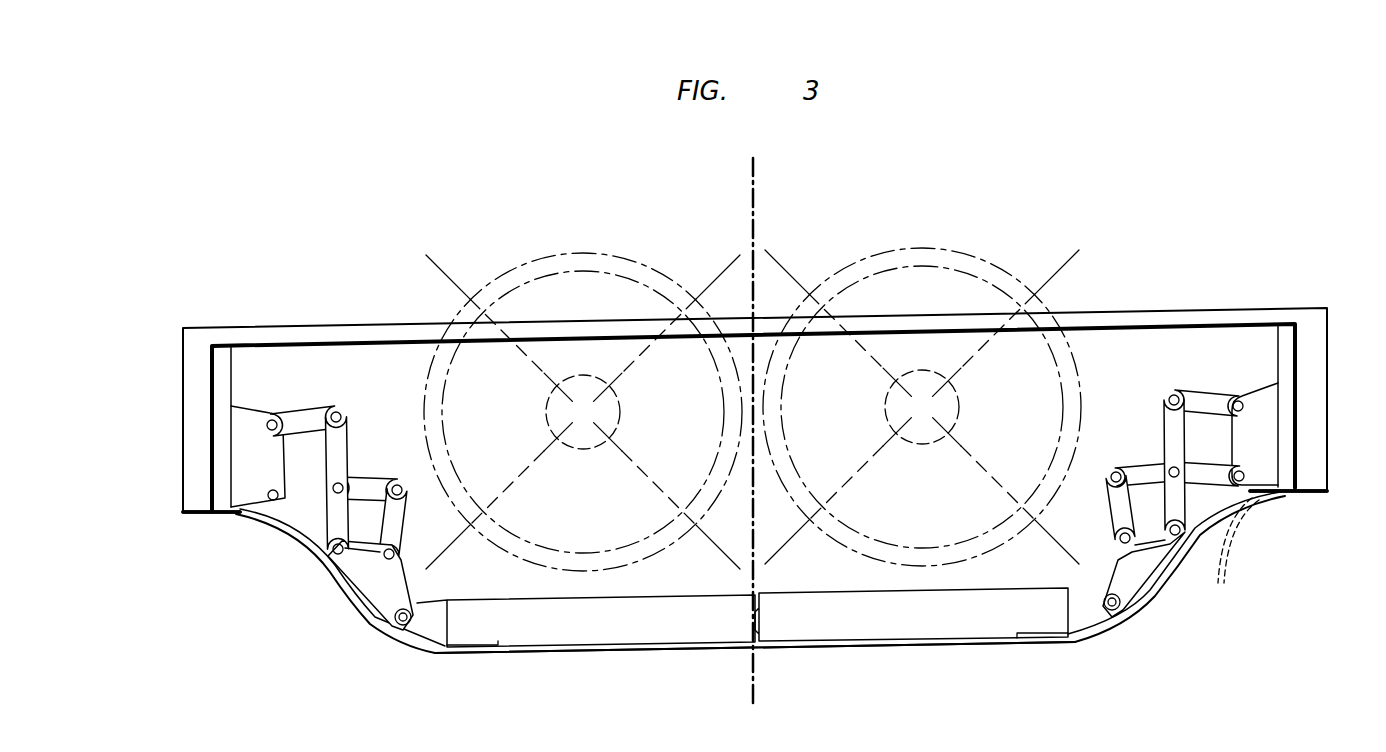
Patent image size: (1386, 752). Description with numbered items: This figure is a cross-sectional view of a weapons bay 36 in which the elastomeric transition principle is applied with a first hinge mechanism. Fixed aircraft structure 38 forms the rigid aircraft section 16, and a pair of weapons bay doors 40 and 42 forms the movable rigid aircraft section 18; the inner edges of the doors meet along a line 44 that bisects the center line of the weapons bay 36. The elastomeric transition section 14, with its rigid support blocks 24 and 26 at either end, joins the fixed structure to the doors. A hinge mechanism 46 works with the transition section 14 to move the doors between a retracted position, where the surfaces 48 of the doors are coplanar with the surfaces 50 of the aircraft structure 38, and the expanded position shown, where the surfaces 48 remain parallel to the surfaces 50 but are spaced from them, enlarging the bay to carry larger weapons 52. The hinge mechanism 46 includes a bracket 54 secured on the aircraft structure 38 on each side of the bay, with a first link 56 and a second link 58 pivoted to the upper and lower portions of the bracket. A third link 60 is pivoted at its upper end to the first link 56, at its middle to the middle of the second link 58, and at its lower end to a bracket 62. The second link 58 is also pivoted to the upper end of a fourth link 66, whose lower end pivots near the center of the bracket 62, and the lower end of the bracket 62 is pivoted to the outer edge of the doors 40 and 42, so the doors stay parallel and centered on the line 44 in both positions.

The elastomeric transition section 14 is at (352, 606).
The rigid aircraft section 16 is at (198, 342).
The movable rigid aircraft section 18 is at (520, 640).
The rigid support block 24 is at (1308, 494).
The rigid support block 26 is at (1035, 636).
The weapons bay 36 is at (1124, 279).
The aircraft structure 38 is at (1313, 358).
The weapons bay door 40 is at (693, 650).
The weapons bay door 42 is at (832, 628).
The line 44 is at (756, 178).
The hinge mechanism 46 is at (368, 402).
The surfaces of the doors 48 is at (583, 653).
The surfaces of the aircraft structure 50 is at (195, 517).
The weapons 52 is at (582, 254).
The bracket 54 is at (250, 421).
The first link 56 is at (1208, 399).
The second link 58 is at (1207, 474).
The third link 60 is at (1172, 425).
The bracket 62 is at (1127, 580).
The fourth link 66 is at (1112, 496).